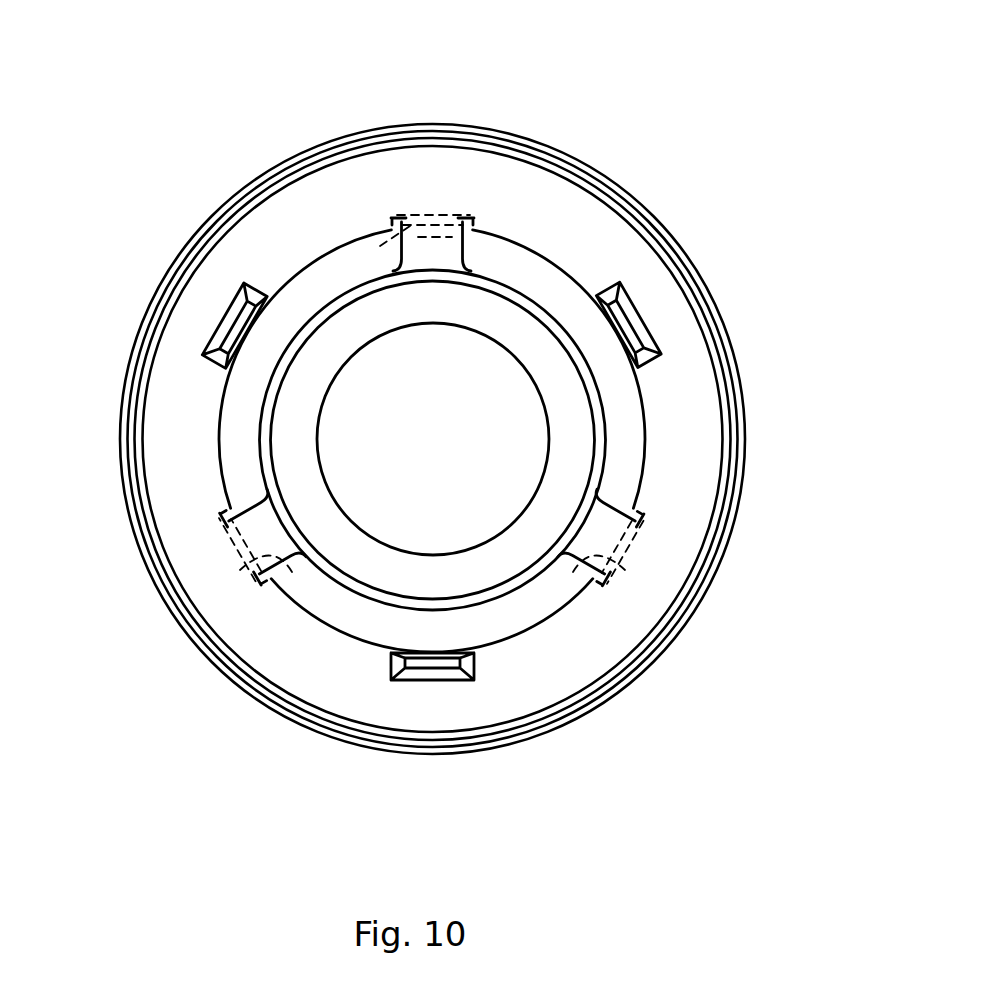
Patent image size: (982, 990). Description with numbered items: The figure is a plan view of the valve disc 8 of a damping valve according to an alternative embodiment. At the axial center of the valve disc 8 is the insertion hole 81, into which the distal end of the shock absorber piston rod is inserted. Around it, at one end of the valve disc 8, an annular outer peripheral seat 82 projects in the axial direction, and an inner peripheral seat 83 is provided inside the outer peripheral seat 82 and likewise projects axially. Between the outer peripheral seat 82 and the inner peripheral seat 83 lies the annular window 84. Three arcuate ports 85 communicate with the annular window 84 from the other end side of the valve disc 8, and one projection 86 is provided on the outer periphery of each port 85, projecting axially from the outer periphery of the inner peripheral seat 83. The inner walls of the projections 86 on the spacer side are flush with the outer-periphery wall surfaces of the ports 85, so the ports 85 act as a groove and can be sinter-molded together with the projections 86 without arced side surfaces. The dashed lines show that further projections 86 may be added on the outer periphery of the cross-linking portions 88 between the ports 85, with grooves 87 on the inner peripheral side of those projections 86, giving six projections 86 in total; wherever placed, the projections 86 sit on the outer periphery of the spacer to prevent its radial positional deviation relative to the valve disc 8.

The valve disc 8 is at (636, 189).
The insertion hole 81 is at (512, 358).
The outer peripheral seat 82 is at (712, 578).
The inner peripheral seat 83 is at (582, 428).
The annular window 84 is at (652, 583).
The port 85 is at (308, 268).
The projection 86 is at (219, 333).
The groove 87 is at (372, 220).
The cross-linking portion 88 is at (445, 258).